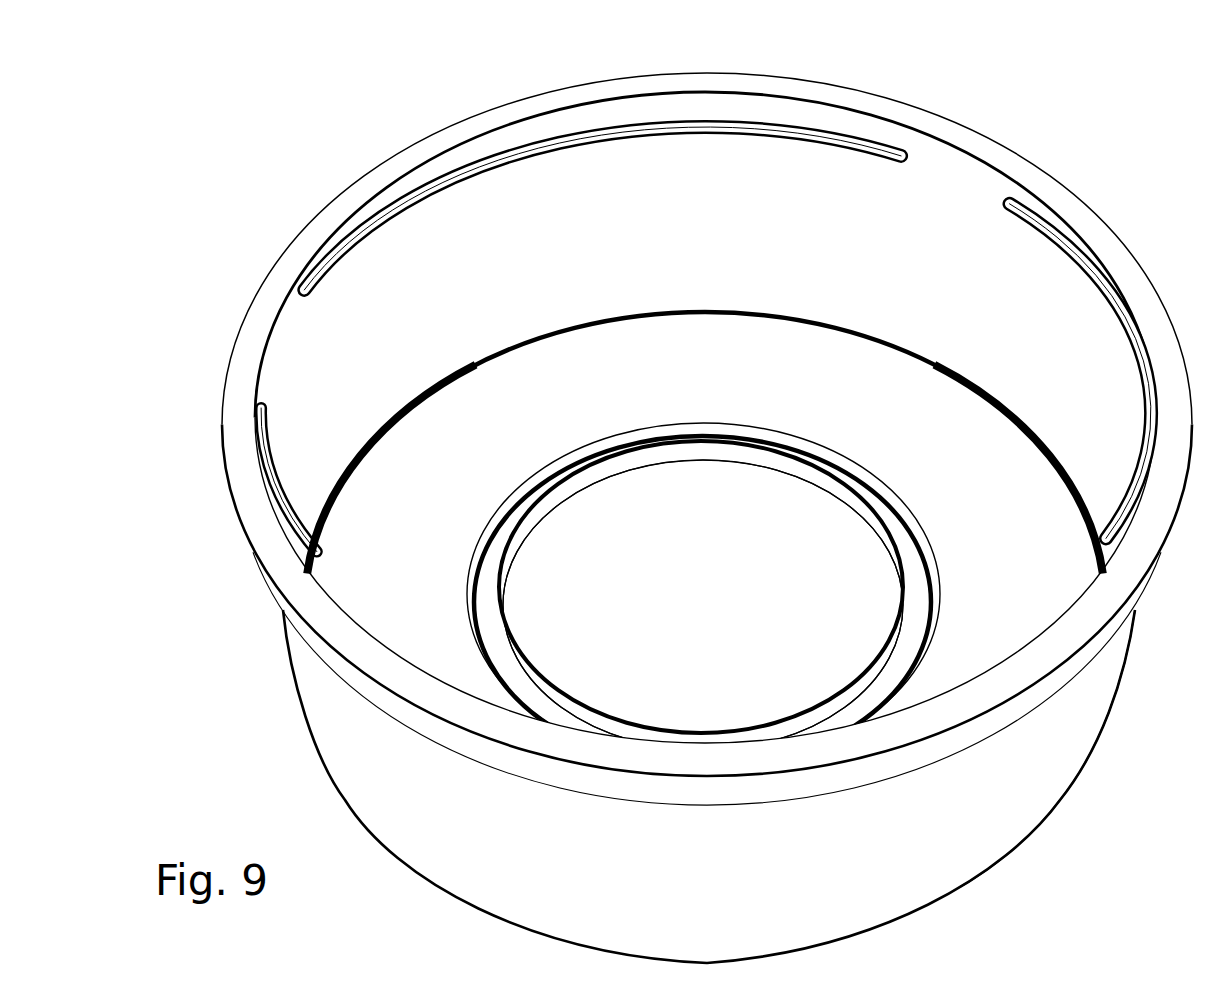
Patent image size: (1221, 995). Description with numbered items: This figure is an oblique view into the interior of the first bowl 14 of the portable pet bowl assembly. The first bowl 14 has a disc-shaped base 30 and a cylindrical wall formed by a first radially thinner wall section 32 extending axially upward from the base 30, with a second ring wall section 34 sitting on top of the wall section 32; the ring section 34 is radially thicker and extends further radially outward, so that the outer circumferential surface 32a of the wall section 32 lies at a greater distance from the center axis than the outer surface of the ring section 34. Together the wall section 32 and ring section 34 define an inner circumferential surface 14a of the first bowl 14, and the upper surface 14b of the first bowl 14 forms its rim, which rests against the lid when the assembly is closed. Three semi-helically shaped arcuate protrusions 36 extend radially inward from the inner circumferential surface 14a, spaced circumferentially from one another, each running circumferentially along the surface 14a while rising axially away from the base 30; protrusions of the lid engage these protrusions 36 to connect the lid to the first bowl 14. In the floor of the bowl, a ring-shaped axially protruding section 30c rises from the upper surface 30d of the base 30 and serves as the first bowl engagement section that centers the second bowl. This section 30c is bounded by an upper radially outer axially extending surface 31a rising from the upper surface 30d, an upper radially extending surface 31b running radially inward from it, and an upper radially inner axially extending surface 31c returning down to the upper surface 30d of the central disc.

The first bowl 14 is at (667, 409).
The inner circumferential surface 14a is at (957, 207).
The upper surface 14b is at (467, 130).
The protrusions 36 is at (853, 138).
The base 30 is at (568, 343).
The axially protruding section 30c is at (693, 393).
The upper surface 30d is at (787, 510).
The upper radially outer axially extending surface 31a is at (482, 660).
The upper radially extending surface 31b is at (486, 600).
The upper radially inner axially extending surface 31c is at (520, 537).
The ring wall section 34 is at (296, 655).
The wall section 32 is at (328, 760).
The outer circumferential surface 32a is at (1090, 697).